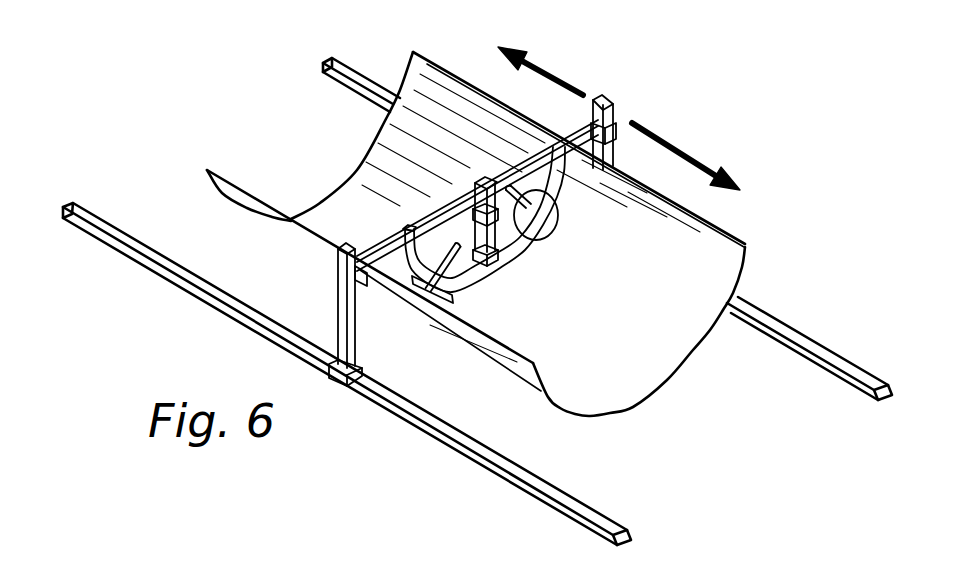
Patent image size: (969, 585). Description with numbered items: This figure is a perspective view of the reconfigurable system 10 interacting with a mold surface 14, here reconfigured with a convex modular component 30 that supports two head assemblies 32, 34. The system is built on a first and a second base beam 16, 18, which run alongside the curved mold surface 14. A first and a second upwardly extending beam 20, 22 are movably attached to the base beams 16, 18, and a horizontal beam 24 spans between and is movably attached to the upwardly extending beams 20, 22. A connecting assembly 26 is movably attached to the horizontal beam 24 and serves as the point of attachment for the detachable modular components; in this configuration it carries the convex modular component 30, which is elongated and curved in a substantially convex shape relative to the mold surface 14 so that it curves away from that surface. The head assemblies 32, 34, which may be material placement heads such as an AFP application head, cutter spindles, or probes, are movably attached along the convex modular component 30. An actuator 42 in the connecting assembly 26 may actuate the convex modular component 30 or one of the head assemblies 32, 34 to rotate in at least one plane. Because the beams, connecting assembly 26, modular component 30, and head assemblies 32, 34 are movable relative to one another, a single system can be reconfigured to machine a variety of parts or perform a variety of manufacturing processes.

The reconfigurable system 10 is at (748, 50).
The mold surface 14 is at (640, 355).
The first base beam 16 is at (455, 440).
The second base beam 18 is at (808, 345).
The first upwardly extending beam 20 is at (342, 323).
The second upwardly extending beam 22 is at (614, 155).
The horizontal beam 24 is at (582, 126).
The connecting assembly 26 is at (473, 191).
The convex modular component 30 is at (505, 248).
The head assembly 32 is at (452, 297).
The head assembly 34 is at (553, 224).
The actuator 42 is at (493, 218).